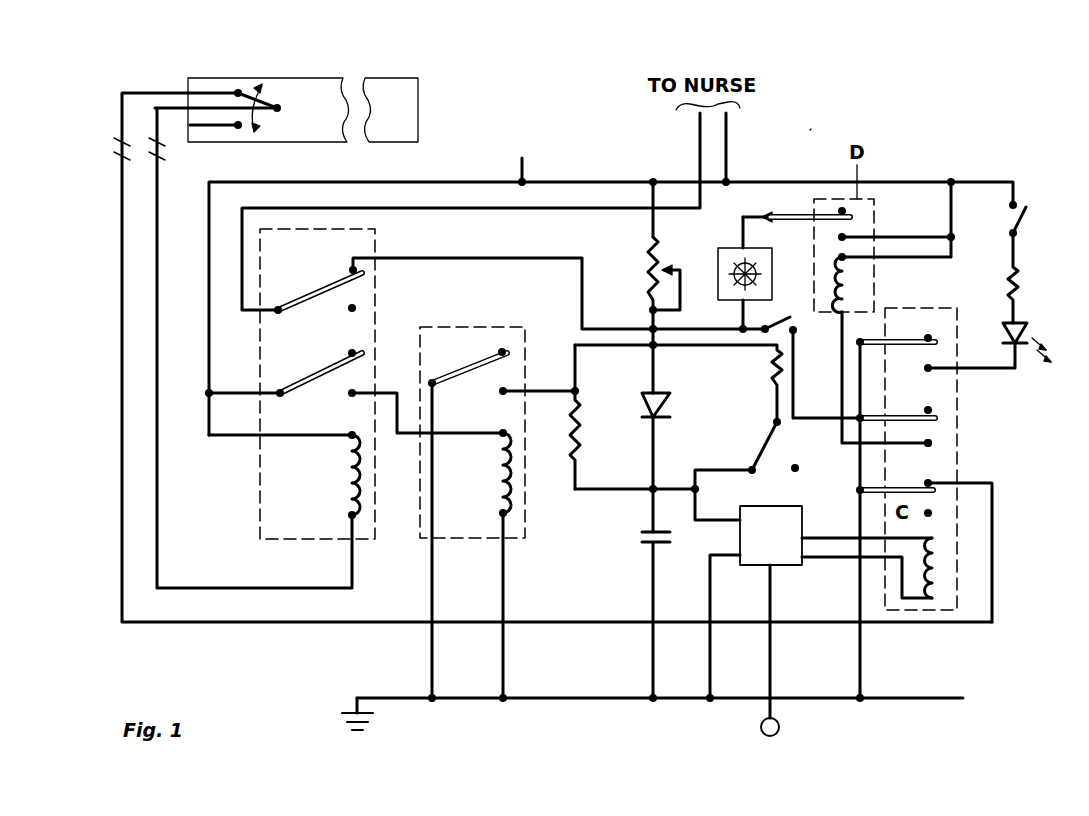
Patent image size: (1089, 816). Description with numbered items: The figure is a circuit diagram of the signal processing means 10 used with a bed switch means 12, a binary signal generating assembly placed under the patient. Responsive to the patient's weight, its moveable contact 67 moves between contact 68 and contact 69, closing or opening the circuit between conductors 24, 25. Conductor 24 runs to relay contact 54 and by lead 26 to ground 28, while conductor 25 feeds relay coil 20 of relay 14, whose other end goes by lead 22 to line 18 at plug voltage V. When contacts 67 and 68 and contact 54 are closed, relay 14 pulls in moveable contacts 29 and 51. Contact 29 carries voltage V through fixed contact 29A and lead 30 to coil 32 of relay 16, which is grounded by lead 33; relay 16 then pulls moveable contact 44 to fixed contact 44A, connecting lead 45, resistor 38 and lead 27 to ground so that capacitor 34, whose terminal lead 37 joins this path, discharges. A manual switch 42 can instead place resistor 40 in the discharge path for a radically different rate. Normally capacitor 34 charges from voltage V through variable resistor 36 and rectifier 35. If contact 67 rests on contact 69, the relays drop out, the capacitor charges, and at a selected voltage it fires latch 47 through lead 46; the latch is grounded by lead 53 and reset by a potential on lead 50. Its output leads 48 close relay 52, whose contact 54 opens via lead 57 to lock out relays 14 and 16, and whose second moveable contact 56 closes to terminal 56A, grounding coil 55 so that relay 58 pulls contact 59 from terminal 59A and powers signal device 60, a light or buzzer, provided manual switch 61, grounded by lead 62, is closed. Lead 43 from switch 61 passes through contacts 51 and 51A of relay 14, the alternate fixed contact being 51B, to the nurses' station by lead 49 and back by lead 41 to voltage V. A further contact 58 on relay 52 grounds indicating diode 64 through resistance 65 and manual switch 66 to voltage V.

The signal processing means 10 is at (815, 126).
The switch means 12 is at (305, 78).
The relay 14 is at (260, 539).
The relay 16 is at (525, 540).
The line 18 is at (460, 182).
The relay coil 20 is at (348, 495).
The lead 22 is at (209, 292).
The conductor 24 is at (122, 352).
The conductor 25 is at (158, 318).
The lead 26 is at (862, 665).
The lead 27 is at (432, 662).
The ground 28 is at (946, 698).
The moveable contact 29 is at (318, 368).
The fixed contact 29A is at (352, 397).
The conductor 30 is at (397, 393).
The relay coil 32 is at (498, 495).
The lead 33 is at (505, 665).
The capacitor 34 is at (648, 540).
The rectifier 35 is at (665, 418).
The variable resistor 36 is at (656, 270).
The capacitor lead 37 is at (650, 492).
The resistor 38 is at (582, 440).
The second resistor 40 is at (775, 370).
The lead 41 is at (728, 131).
The manual switch 42 is at (770, 434).
The lead 43 is at (528, 258).
The moveable contact 44 is at (485, 362).
The fixed contact 44A is at (503, 395).
The lead 45 is at (546, 391).
The lead 46 is at (700, 490).
The latch 47 is at (796, 506).
The latch output conductors 48 is at (826, 542).
The lead 49 is at (700, 122).
The lead 50 is at (772, 665).
The moveable contact 51 is at (313, 290).
The fixed contact 51A is at (352, 268).
The relay A contact terminal 51B is at (356, 308).
The relay 52 is at (957, 600).
The lead 53 is at (711, 665).
The relay contact 54 is at (926, 483).
The coil 55 is at (848, 290).
The second moveable contact 56 is at (926, 410).
The terminal 56A is at (933, 443).
The lead 57 is at (992, 520).
The relay 58 is at (928, 338).
The contact 59 is at (790, 215).
The relay D contact terminal 59A is at (838, 237).
The signal device 60 is at (725, 248).
The manual switch 61 is at (781, 318).
The lead 62 is at (796, 385).
The indicating diode 64 is at (1028, 334).
The resistor 65 is at (1020, 283).
The manual switch 66 is at (1022, 218).
The moveable contact 67 is at (281, 108).
The contact 68 is at (238, 92).
The contact 69 is at (238, 129).